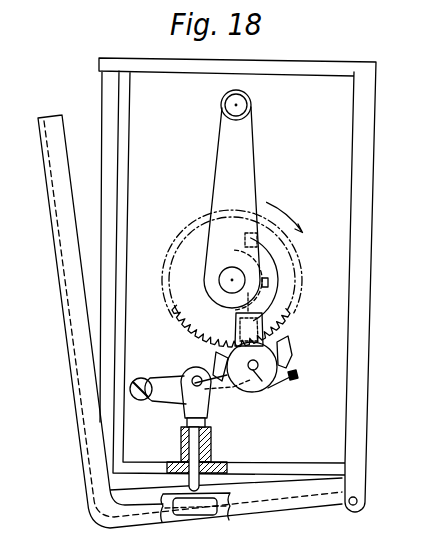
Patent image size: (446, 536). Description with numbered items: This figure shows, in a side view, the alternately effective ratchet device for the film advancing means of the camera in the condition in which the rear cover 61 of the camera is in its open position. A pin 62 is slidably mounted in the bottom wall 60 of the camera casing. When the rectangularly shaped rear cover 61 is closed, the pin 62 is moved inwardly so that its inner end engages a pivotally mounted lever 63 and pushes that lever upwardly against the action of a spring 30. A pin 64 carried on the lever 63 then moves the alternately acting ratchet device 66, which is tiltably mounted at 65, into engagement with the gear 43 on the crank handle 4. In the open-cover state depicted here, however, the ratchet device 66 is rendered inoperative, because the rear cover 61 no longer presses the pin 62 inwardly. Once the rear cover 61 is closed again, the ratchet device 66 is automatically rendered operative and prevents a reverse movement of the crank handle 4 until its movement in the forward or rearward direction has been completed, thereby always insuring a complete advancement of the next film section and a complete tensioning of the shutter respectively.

The crank handle 4 is at (243, 190).
The gear 43 is at (288, 293).
The spring 30 is at (160, 392).
The bottom wall 60 is at (213, 465).
The rear cover 61 is at (100, 495).
The pin 62 is at (206, 416).
The lever 63 is at (160, 378).
The pin 64 is at (197, 378).
The tiltable mounting 65 is at (262, 382).
The ratchet device 66 is at (297, 378).